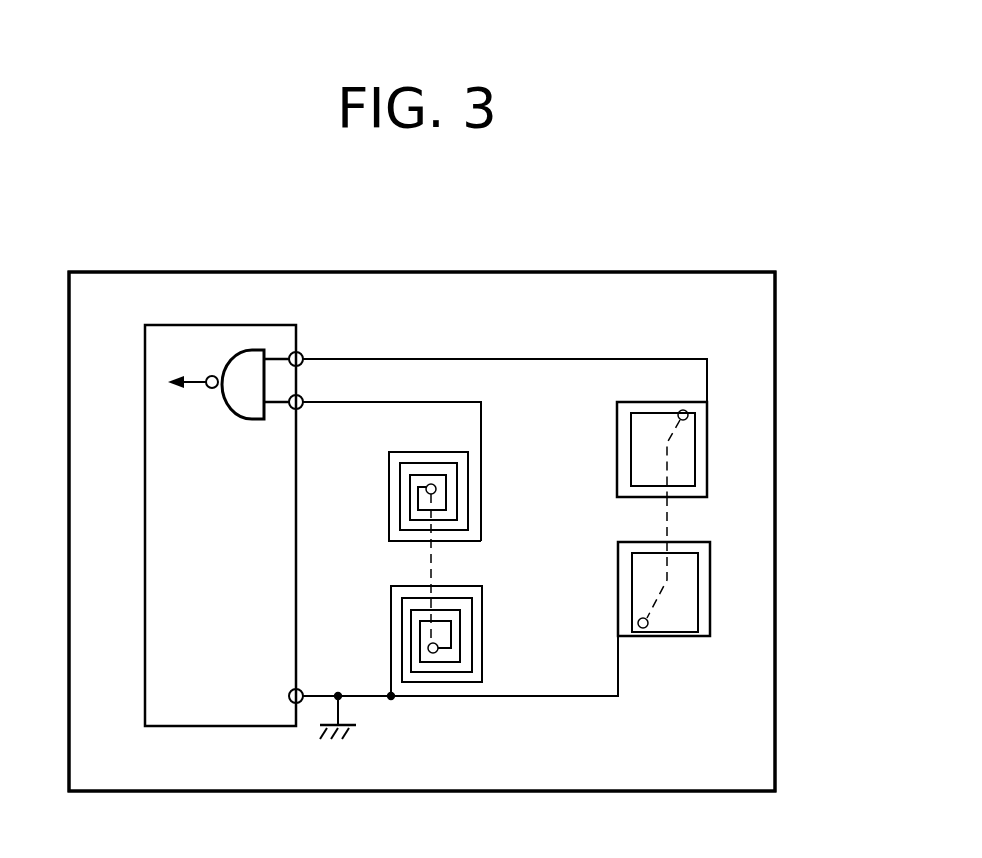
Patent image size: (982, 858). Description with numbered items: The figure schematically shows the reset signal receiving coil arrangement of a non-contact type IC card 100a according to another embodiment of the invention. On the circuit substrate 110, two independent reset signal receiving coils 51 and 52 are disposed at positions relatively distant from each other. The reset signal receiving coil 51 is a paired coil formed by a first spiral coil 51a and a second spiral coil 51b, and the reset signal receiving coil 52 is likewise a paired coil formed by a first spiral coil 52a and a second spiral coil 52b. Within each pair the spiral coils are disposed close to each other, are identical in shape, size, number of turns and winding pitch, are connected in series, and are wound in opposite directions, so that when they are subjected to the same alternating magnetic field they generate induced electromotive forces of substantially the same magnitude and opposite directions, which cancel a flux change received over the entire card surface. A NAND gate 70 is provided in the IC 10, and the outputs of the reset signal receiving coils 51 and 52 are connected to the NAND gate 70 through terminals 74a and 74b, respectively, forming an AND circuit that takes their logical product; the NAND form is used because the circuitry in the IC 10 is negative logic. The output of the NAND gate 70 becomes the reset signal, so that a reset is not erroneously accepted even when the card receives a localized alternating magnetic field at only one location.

The IC 10 is at (144, 475).
The reset signal receiving coil 51 is at (246, 461).
The first spiral coil 51a is at (389, 525).
The second spiral coil 51b is at (391, 628).
The reset signal receiving coil 52 is at (731, 428).
The first spiral coil 52a is at (707, 432).
The second spiral coil 52b is at (710, 592).
The NAND gate 70 is at (245, 350).
The terminal 74a is at (300, 353).
The terminal 74b is at (300, 398).
The non-contact type IC card 100a is at (878, 255).
The circuit substrate 110 is at (705, 271).